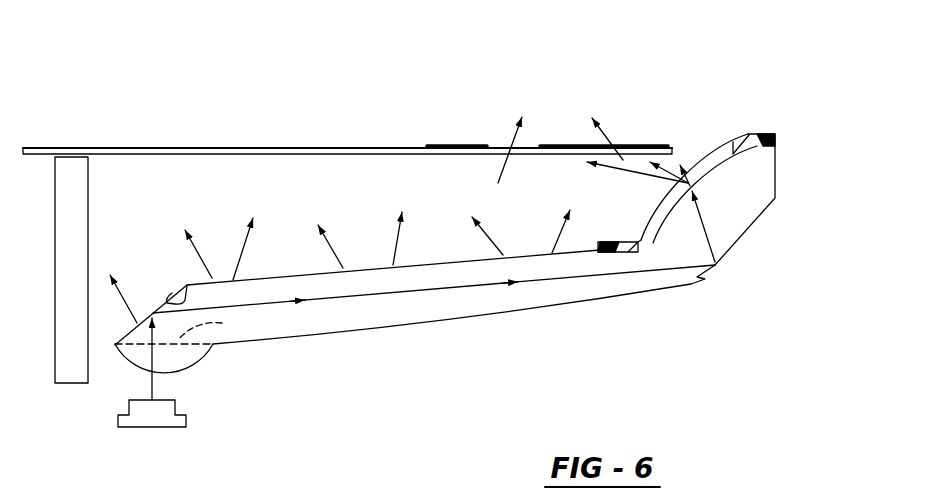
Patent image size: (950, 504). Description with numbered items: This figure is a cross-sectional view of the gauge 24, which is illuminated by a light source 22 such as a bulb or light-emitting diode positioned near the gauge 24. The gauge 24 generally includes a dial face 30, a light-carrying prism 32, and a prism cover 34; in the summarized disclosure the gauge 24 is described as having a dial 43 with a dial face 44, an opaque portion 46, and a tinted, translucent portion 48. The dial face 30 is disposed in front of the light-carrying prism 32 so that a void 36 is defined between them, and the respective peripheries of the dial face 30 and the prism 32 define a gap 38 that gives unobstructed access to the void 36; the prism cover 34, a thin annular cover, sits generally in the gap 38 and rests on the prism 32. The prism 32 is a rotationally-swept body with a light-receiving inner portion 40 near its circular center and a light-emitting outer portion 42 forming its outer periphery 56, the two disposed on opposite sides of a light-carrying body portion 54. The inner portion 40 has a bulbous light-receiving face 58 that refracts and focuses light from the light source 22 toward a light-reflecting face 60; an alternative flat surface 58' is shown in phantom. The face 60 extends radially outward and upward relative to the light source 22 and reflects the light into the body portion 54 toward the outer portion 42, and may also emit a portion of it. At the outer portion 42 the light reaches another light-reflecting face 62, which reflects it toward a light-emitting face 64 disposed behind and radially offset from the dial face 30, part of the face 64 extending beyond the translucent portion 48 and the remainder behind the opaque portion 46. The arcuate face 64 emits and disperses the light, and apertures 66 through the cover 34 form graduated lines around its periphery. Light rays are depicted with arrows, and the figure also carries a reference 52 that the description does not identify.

The light source 22 is at (148, 428).
The gauge 24 is at (70, 100).
The dial face 30 is at (162, 147).
The light-carrying prism 32 is at (312, 333).
The prism cover 34 is at (763, 133).
The void 36 is at (366, 199).
The gap 38 is at (692, 143).
The light-receiving inner portion 40 is at (245, 372).
The light-emitting outer portion 42 is at (775, 245).
The dial 43 is at (230, 147).
The dial face 44 is at (380, 148).
The opaque portion 46 is at (314, 148).
The tinted translucent portion 48 is at (624, 148).
The indicia strip 52 is at (480, 148).
The light-carrying body portion 54 is at (410, 343).
The outer periphery 56 is at (777, 105).
The light-receiving face 58 is at (188, 379).
The flat surface 58' is at (215, 325).
The light-reflecting face 60 is at (162, 298).
The light-reflecting face 62 is at (700, 280).
The light-emitting face 64 is at (655, 215).
The apertures 66 is at (716, 160).